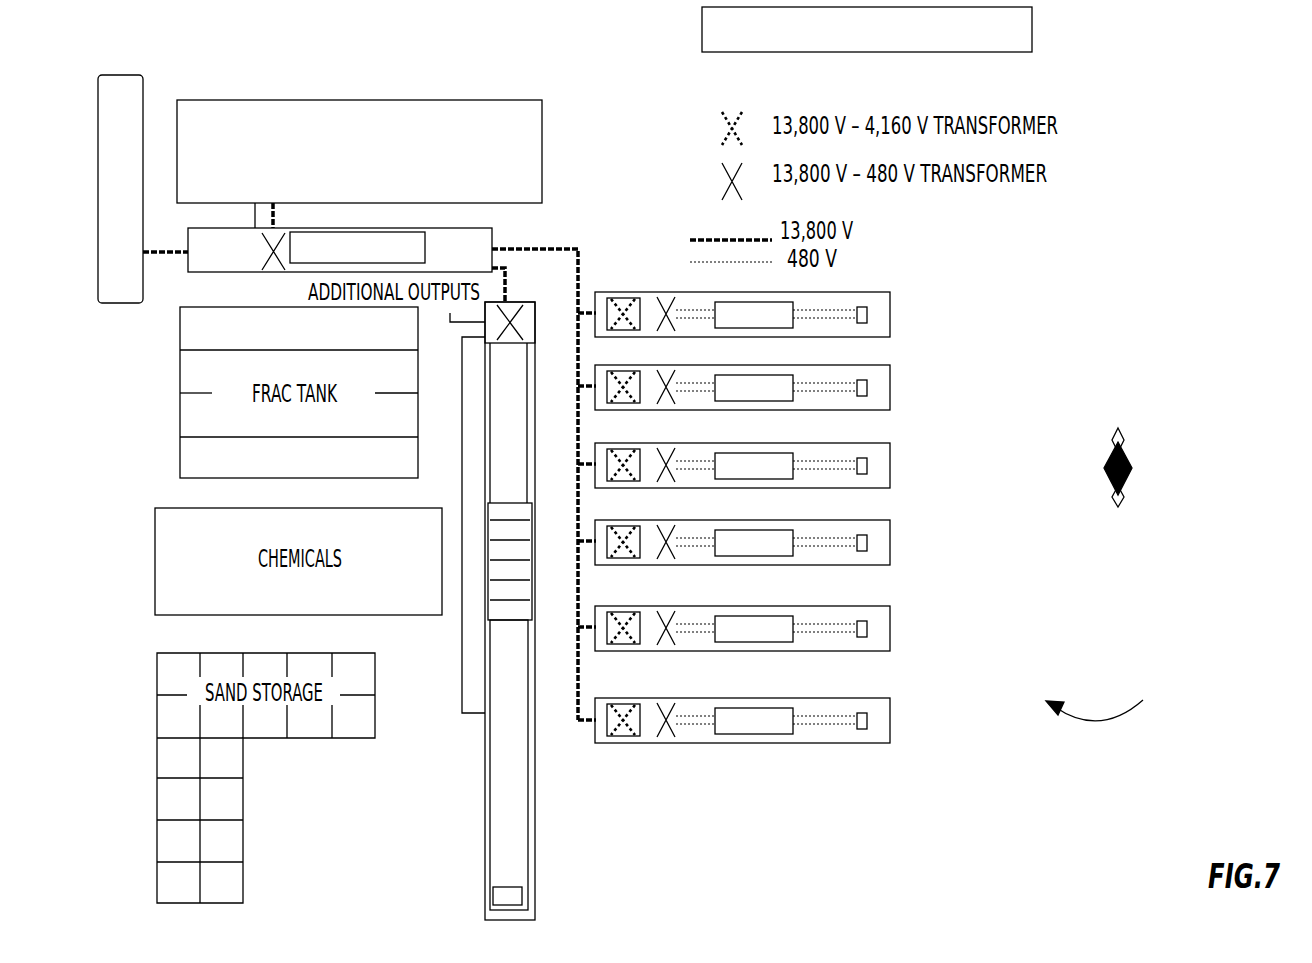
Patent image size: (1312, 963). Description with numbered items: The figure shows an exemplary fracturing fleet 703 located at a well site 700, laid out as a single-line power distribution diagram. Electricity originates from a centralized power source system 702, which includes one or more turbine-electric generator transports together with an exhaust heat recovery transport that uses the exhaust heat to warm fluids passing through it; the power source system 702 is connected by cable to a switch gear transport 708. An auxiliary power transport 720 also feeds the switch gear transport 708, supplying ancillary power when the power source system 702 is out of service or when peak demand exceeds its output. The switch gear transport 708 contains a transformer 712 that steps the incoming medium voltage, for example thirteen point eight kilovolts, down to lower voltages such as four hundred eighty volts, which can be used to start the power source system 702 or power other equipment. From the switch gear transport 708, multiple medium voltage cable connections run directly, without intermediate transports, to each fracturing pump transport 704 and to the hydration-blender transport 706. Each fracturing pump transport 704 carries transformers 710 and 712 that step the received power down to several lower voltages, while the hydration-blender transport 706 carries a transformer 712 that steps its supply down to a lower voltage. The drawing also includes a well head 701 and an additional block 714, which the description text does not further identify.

The well site 700 is at (1180, 324).
The well head 701 is at (1213, 499).
The power source system 702 is at (373, 165).
The fracturing fleet 703 is at (1099, 691).
The fracturing pump transport 704 is at (770, 326).
The hydration-blender transport 706 is at (518, 418).
The switch gear transport 708 is at (370, 261).
The transformer 710 is at (624, 333).
The transformer 712 is at (270, 270).
The data van / control unit 714 is at (887, 38).
The auxiliary power transport 720 is at (131, 74).